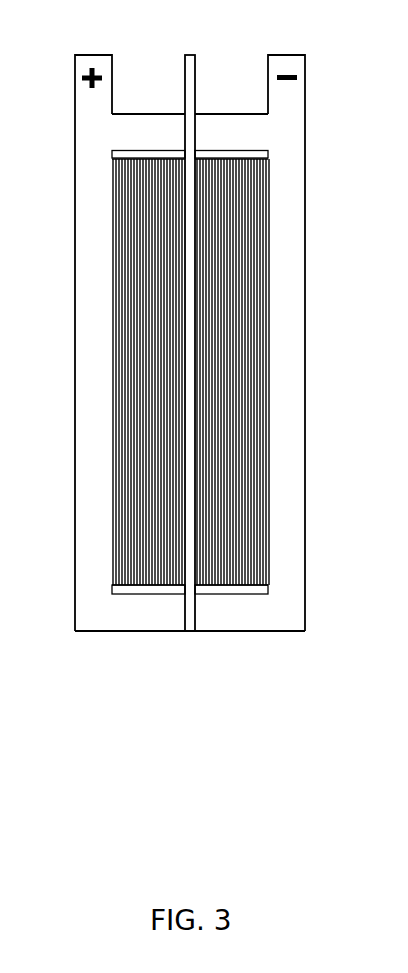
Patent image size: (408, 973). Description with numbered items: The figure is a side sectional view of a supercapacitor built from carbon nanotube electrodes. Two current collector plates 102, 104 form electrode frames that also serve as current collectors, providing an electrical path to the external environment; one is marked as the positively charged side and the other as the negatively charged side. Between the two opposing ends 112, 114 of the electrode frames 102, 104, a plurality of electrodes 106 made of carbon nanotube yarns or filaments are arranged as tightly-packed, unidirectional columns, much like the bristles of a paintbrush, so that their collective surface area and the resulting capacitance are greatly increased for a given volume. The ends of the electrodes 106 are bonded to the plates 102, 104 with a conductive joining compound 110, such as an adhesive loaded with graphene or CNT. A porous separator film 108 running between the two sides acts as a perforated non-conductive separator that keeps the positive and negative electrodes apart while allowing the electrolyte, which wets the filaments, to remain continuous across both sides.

The current collector plate 102 is at (82, 63).
The current collector plate 104 is at (298, 62).
The carbon nanotube yarns/filaments 106 is at (133, 303).
The porous separator film 108 is at (191, 67).
The conductive joining compound 110 is at (137, 156).
The end of electrode frame 112 is at (210, 138).
The end of electrode frame 114 is at (172, 620).